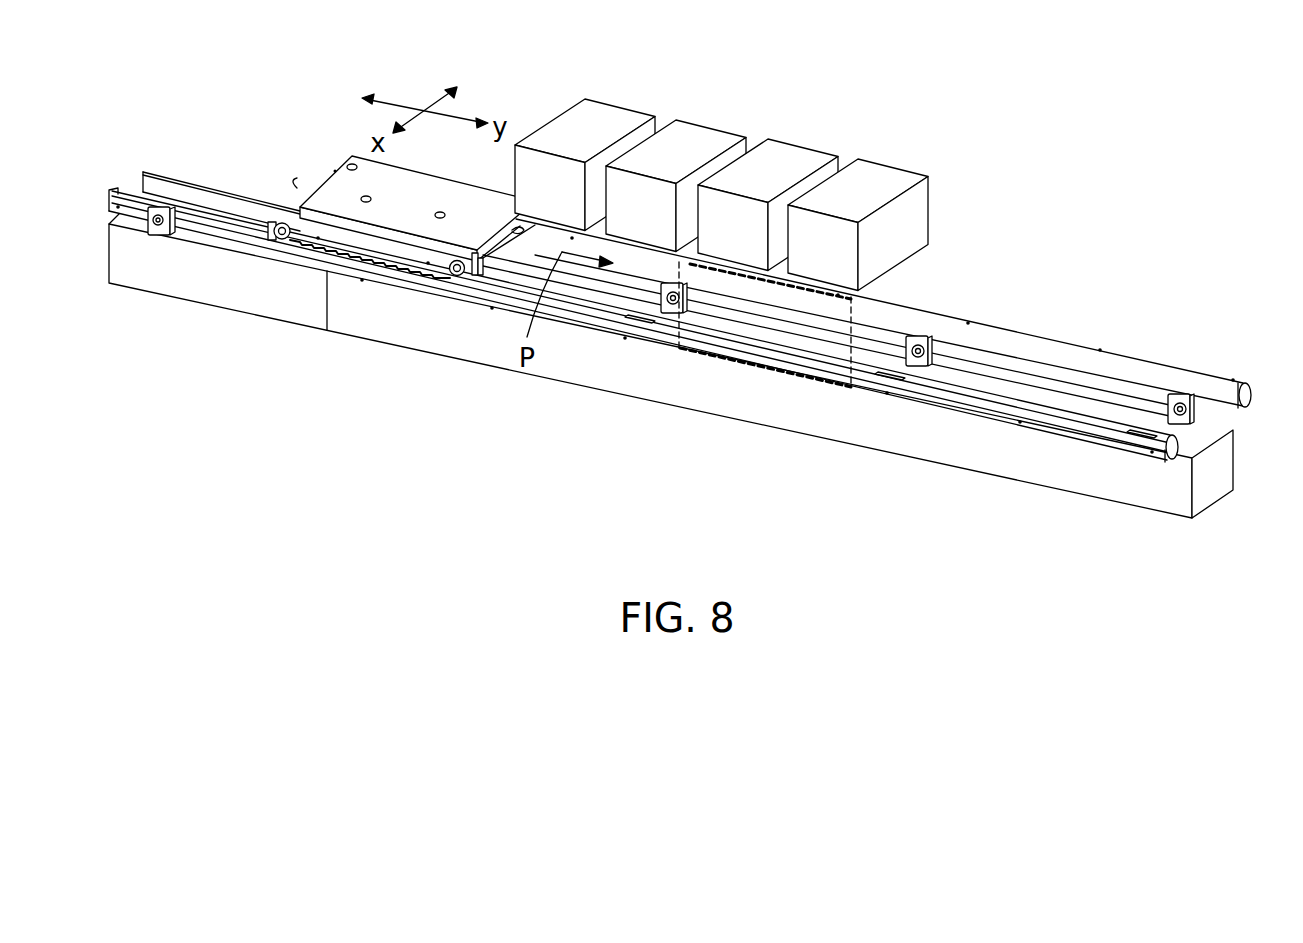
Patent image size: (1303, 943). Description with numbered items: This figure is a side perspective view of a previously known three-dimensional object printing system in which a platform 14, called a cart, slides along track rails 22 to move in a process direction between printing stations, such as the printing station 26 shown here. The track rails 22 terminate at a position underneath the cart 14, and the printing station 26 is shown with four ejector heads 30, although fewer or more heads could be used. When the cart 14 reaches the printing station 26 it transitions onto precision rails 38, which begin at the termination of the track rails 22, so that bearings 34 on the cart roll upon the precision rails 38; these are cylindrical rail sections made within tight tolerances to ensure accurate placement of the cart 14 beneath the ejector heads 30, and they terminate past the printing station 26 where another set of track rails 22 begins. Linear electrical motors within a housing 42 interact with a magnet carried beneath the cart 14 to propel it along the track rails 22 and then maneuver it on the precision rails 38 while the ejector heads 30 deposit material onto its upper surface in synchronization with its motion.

The platform 14 is at (418, 171).
The track rails 22 is at (131, 184).
The printing station 26 is at (726, 153).
The ejector heads 30 is at (937, 121).
The bearings 34 is at (283, 224).
The precision rails 38 is at (1022, 330).
The housing 42 is at (968, 457).